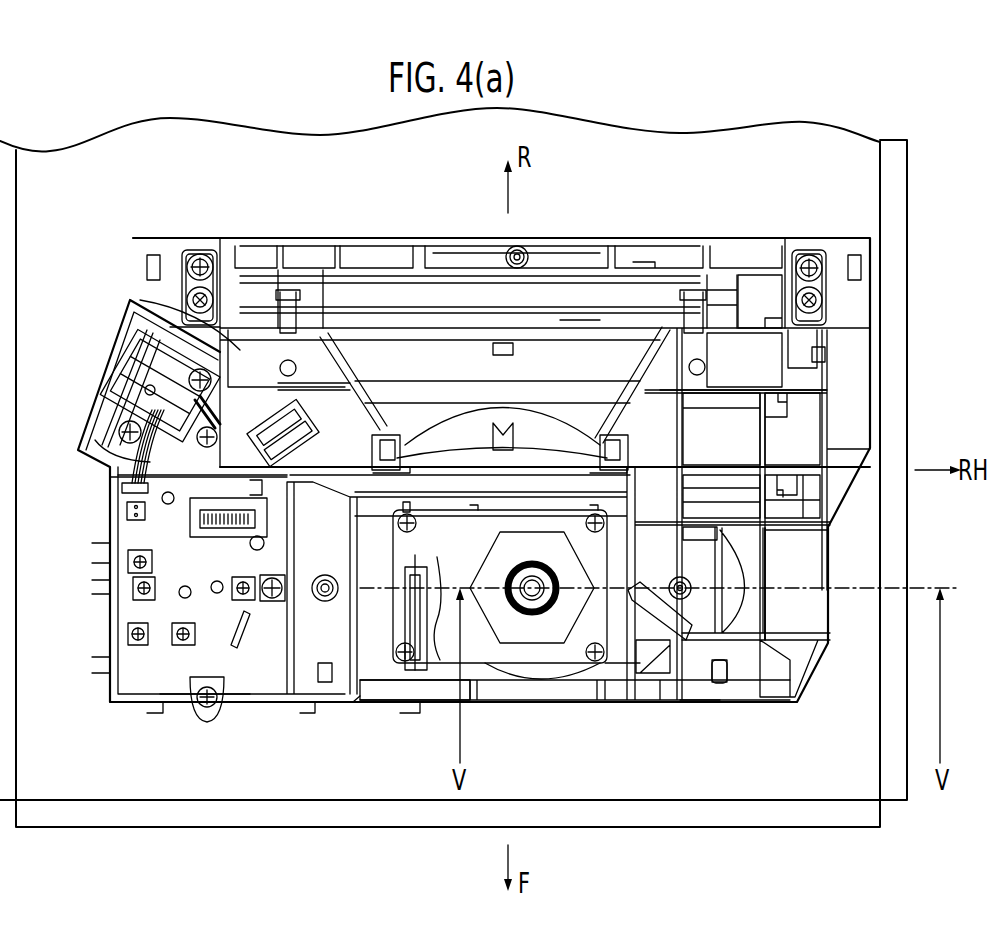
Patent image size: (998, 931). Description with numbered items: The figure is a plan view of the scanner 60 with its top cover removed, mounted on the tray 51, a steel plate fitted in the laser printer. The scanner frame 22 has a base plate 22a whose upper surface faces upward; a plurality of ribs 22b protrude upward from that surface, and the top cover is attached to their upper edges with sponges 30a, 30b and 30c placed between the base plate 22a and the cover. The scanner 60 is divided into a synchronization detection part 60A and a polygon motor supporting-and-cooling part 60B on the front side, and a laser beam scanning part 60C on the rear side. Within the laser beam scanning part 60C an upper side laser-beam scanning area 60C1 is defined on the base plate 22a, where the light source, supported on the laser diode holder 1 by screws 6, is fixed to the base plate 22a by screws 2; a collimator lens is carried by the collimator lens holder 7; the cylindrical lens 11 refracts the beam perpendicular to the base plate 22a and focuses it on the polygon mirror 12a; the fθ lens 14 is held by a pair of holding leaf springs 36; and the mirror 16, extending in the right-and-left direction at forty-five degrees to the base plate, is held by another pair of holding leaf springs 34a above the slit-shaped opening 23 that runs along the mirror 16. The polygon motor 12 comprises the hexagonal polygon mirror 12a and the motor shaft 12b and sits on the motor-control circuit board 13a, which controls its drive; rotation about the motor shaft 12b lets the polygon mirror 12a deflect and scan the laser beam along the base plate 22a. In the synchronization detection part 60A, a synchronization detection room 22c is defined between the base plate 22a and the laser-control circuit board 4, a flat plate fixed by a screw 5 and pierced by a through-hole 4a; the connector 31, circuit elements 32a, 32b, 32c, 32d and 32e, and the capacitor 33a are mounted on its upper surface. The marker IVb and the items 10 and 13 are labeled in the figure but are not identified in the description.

The laser diode holder 1 is at (105, 452).
The screws 2 is at (125, 400).
The laser-control circuit board 4 is at (118, 675).
The through-hole 4a is at (247, 650).
The screw 5 is at (272, 600).
The screws 6 is at (127, 377).
The collimator lens holder 7 is at (127, 303).
The connector 10 is at (113, 493).
The cylindrical lens 11 is at (300, 405).
The polygon motor 12 is at (515, 647).
The polygon mirror 12a is at (488, 557).
The motor shaft 12b is at (548, 643).
The screw 13 is at (407, 537).
The motor-control circuit board 13a is at (437, 660).
The fθ lens 14 is at (445, 417).
The mirror 16 is at (480, 283).
The scanner frame 22 is at (690, 702).
The base plate 22a is at (815, 610).
The ribs 22b is at (735, 465).
The synchronization detection room 22c is at (233, 705).
The opening 23 is at (580, 318).
The sponge 30a is at (718, 683).
The sponge 30b is at (380, 693).
The sponge 30c is at (187, 520).
The connector 31 is at (220, 530).
The circuit element 32a is at (137, 645).
The circuit element 32b is at (182, 645).
The circuit element 32c is at (126, 636).
The circuit element 32d is at (133, 590).
The circuit element 32e is at (128, 565).
The capacitor 33a is at (180, 596).
The holding leaf springs 34a is at (285, 290).
The holding leaf springs 36 is at (405, 433).
The tray 51 is at (898, 328).
The scanner 60 is at (450, 232).
The synchronization detection part 60A is at (175, 697).
The polygon motor supporting-and-cooling part 60B is at (611, 672).
The laser beam scanning part 60C is at (750, 296).
The upper side laser-beam scanning area 60C1 is at (607, 357).
The section view indicator IVb is at (127, 327).